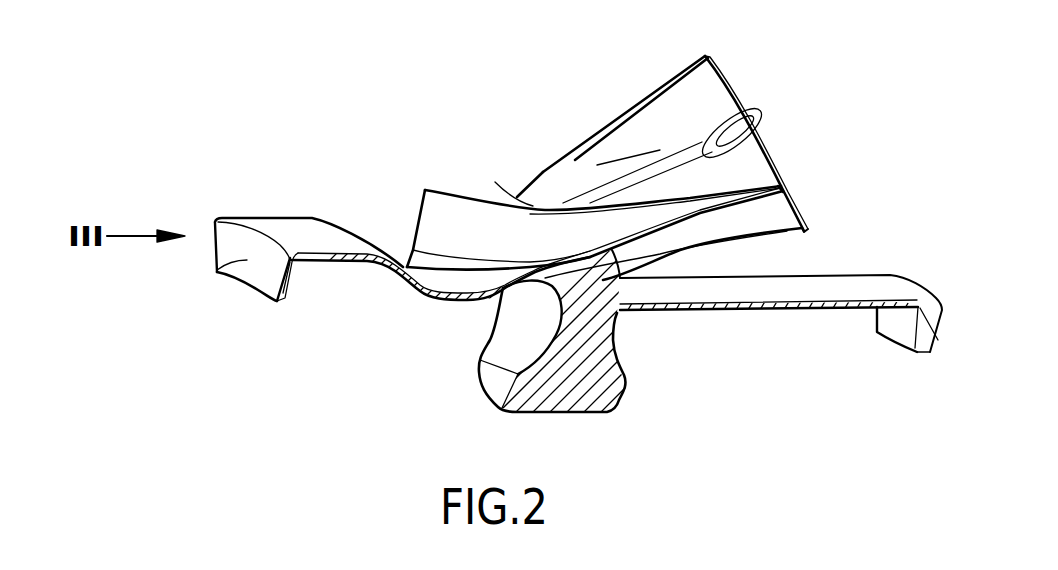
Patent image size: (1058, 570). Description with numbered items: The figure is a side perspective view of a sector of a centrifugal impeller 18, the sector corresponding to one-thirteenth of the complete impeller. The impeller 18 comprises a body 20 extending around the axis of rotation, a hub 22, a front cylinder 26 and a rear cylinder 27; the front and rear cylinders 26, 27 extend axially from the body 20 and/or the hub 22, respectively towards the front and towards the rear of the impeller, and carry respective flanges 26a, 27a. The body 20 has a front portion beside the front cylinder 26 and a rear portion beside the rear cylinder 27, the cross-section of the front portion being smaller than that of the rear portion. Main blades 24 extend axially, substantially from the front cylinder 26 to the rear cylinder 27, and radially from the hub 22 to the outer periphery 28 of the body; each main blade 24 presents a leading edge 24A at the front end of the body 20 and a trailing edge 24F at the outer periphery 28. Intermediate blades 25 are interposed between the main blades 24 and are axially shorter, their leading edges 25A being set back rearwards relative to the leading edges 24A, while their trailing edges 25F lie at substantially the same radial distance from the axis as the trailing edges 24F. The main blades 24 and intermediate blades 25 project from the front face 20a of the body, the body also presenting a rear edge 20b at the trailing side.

The impeller 18 is at (240, 352).
The body 20 is at (435, 297).
The front face 20a is at (647, 176).
The trailing edge of base plate 20b is at (793, 232).
The hub 22 is at (611, 349).
The main blades 24 is at (451, 203).
The leading edge 24A is at (419, 216).
The trailing edge 24F is at (773, 190).
The intermediate blades 25 is at (577, 167).
The leading edges 25A is at (516, 190).
The trailing edges 25F is at (720, 95).
The front cylinder 26 is at (278, 222).
The flange 26a is at (217, 270).
The rear cylinder 27 is at (887, 278).
The flange 27a is at (938, 335).
The outer periphery 28 is at (712, 56).